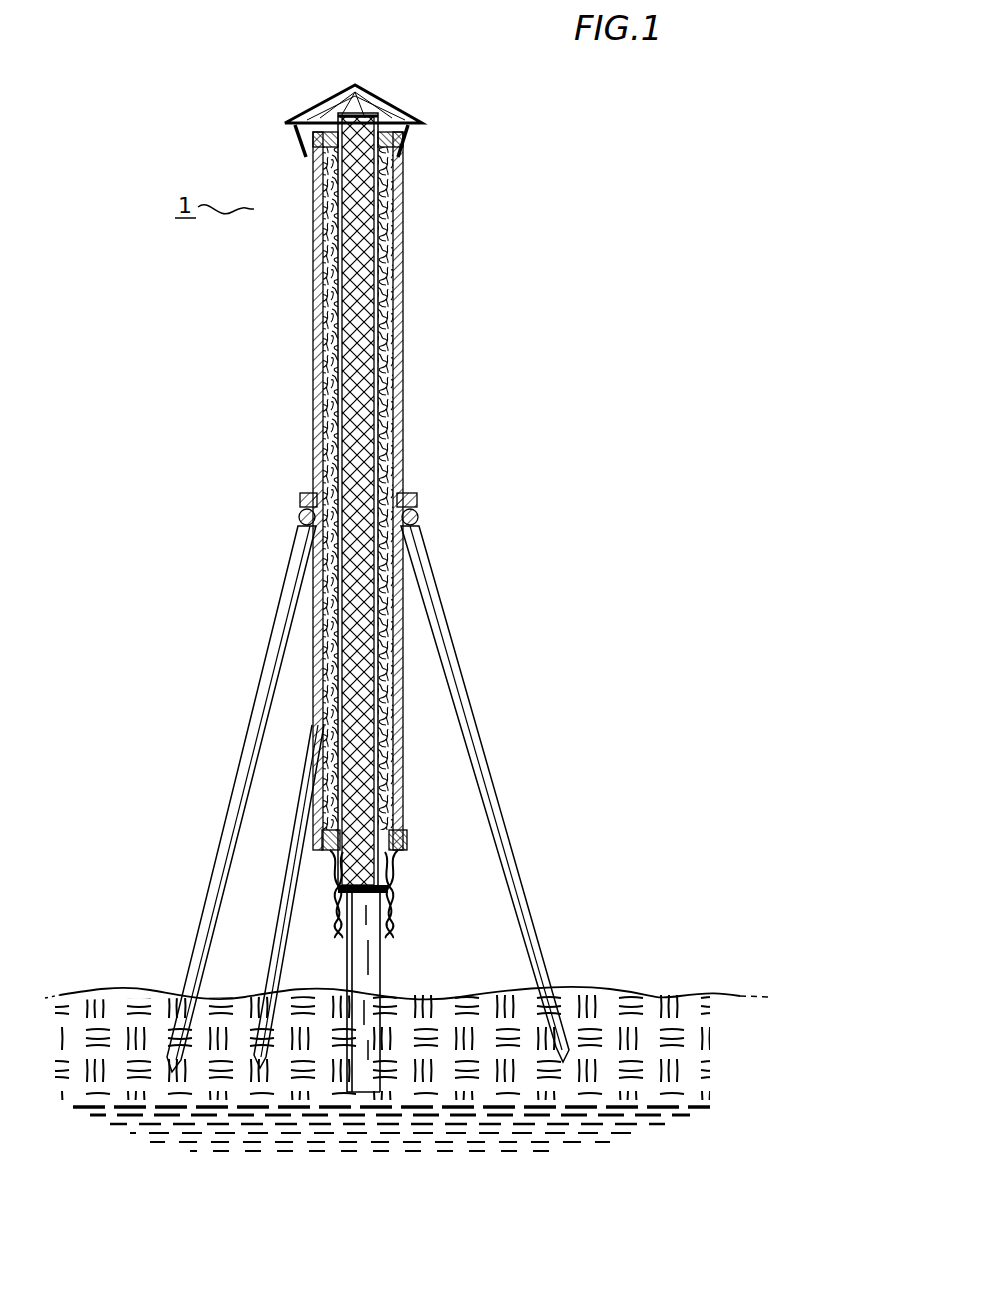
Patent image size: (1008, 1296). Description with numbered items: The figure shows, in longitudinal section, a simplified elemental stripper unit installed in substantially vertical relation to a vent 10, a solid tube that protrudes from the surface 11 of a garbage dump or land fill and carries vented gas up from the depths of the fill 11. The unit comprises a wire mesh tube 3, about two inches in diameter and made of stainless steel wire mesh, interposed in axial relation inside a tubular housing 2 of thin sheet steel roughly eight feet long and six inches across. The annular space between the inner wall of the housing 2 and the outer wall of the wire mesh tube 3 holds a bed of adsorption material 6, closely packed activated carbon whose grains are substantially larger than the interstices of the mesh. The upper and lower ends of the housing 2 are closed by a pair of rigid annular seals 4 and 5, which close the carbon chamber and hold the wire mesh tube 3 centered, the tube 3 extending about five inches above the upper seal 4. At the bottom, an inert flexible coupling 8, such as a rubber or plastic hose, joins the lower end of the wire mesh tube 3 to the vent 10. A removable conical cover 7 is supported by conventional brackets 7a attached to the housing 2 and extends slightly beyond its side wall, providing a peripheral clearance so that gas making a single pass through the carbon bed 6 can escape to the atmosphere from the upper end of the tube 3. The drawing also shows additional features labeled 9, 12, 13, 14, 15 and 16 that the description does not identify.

The tubular housing 2 is at (398, 233).
The wire mesh tube 3 is at (383, 290).
The upper annular seal 4 is at (398, 163).
The lower annular seal 5 is at (400, 850).
The bed of adsorption material 6 is at (398, 378).
The conical cover 7 is at (403, 112).
The brackets 7a is at (407, 133).
The inert flexible coupling 8 is at (400, 883).
The hinge 9 is at (418, 514).
The vent 10 is at (380, 1048).
The surface of the fill 11 is at (573, 990).
The water layer 12 is at (603, 1107).
The collar 13 is at (412, 495).
The front leg 14 is at (270, 628).
The rear leg 15 is at (290, 870).
The right leg 16 is at (445, 600).